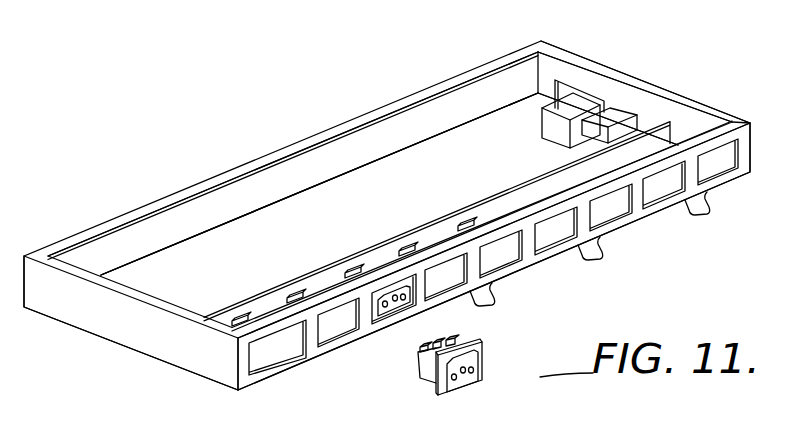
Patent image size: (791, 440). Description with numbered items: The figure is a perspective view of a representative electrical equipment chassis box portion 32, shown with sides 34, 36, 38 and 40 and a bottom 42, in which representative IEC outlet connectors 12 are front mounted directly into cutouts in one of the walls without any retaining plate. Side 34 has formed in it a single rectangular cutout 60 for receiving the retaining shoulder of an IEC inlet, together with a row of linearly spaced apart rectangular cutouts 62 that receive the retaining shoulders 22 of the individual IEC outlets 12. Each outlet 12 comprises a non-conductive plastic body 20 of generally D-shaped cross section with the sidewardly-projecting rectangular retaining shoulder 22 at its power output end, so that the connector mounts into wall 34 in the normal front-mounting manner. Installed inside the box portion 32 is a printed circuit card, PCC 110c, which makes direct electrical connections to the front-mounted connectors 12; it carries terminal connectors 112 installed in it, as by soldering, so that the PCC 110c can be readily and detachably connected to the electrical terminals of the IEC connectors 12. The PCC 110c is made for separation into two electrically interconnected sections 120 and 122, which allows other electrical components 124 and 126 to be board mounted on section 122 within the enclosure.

The IEC outlet 12 is at (411, 310).
The body 20 is at (363, 343).
The retaining shoulder 22 is at (481, 343).
The box portion 32 is at (616, 69).
The side 34 is at (637, 214).
The side 36 is at (133, 336).
The side 38 is at (708, 108).
The side 40 is at (292, 181).
The bottom 42 is at (410, 199).
The rectangular cutout 60 is at (273, 368).
The rectangular cutouts 62 is at (329, 348).
The PCC 110c is at (444, 216).
The terminal connectors 112 is at (296, 298).
The PCC section 120 is at (348, 270).
The PCC section 122 is at (558, 85).
The electrical component 124 is at (547, 127).
The electrical component 126 is at (614, 119).